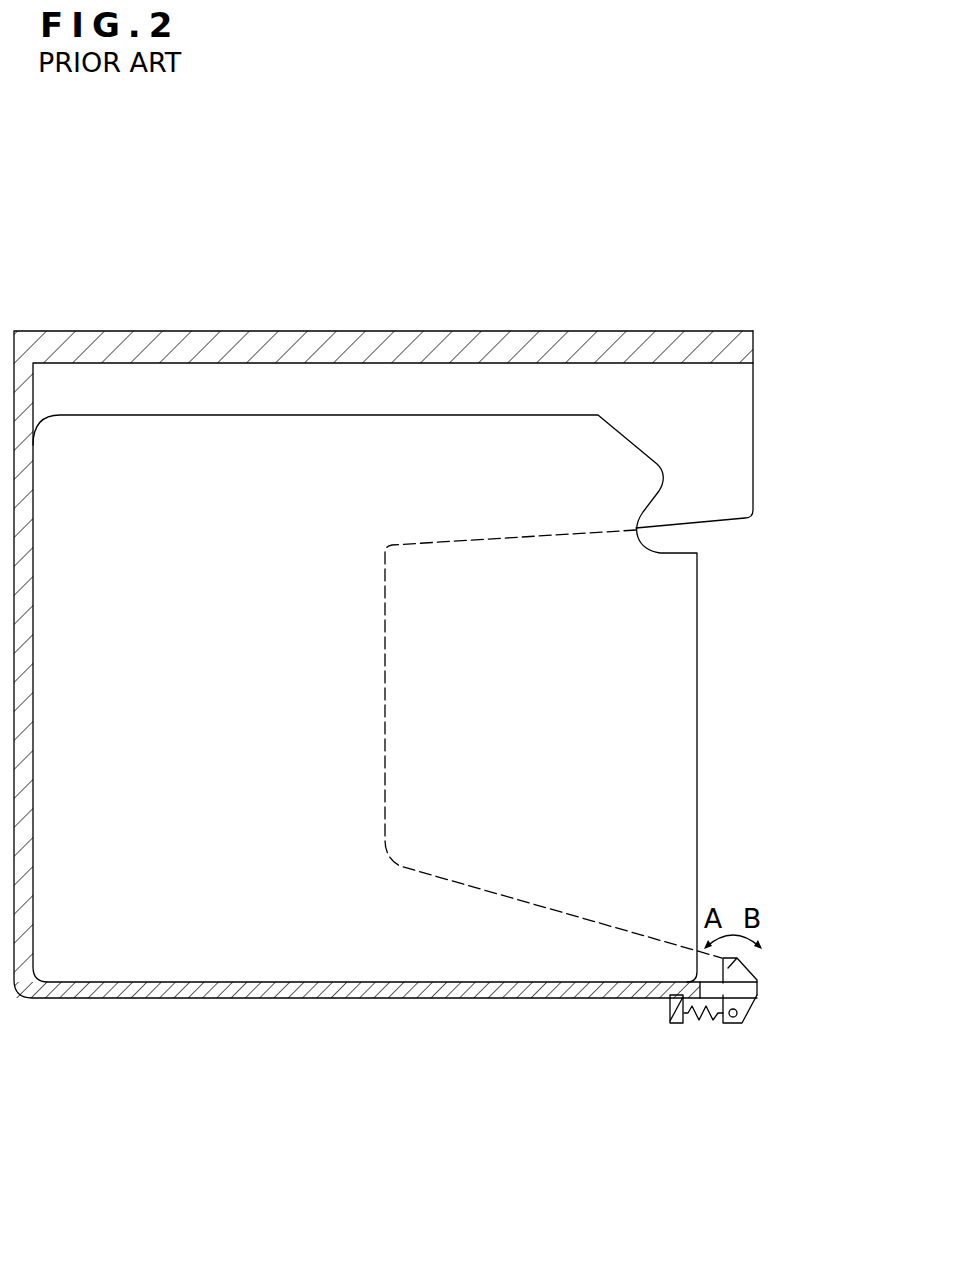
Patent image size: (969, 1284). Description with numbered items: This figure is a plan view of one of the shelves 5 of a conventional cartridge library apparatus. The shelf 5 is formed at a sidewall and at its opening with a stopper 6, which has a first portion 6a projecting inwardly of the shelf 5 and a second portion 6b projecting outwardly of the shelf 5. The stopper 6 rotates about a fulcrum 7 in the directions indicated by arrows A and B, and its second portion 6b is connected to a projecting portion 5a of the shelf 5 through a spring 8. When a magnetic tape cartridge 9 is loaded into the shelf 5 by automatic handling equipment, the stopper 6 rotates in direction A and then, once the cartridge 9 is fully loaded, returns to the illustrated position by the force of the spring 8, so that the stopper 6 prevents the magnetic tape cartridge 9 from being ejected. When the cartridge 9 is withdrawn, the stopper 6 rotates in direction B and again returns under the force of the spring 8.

The shelf 5 is at (378, 352).
The projecting portion 5a is at (670, 1005).
The stopper 6 is at (792, 983).
The first portion 6a is at (738, 958).
The second portion 6b is at (772, 1009).
The fulcrum 7 is at (738, 1015).
The spring 8 is at (713, 1017).
The magnetic tape cartridge 9 is at (318, 933).